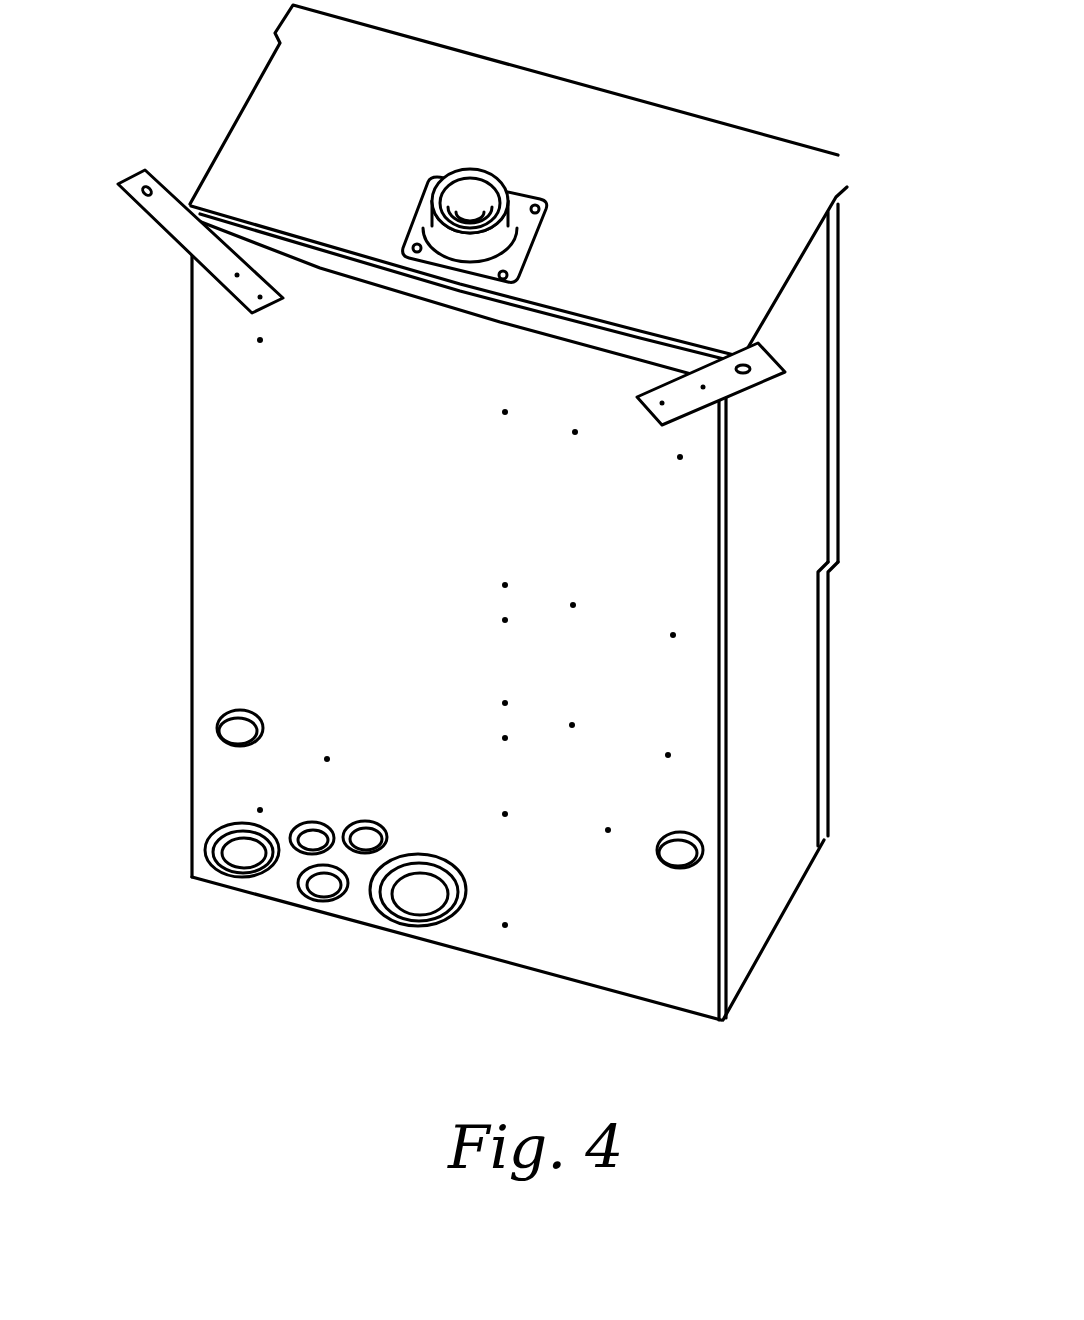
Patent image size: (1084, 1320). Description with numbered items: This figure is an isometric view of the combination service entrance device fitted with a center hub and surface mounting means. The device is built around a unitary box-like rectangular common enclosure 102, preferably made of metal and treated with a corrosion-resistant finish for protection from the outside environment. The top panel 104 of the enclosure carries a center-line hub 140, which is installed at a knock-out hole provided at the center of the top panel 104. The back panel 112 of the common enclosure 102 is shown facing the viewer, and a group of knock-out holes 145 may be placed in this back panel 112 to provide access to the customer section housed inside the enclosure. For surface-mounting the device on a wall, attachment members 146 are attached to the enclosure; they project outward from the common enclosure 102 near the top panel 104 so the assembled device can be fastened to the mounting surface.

The common enclosure 102 is at (803, 663).
The top panel 104 is at (682, 140).
The back panel 112 is at (238, 579).
The center-line hub 140 is at (502, 174).
The knock-out holes 145 is at (413, 898).
The attachment members 146 is at (133, 190).